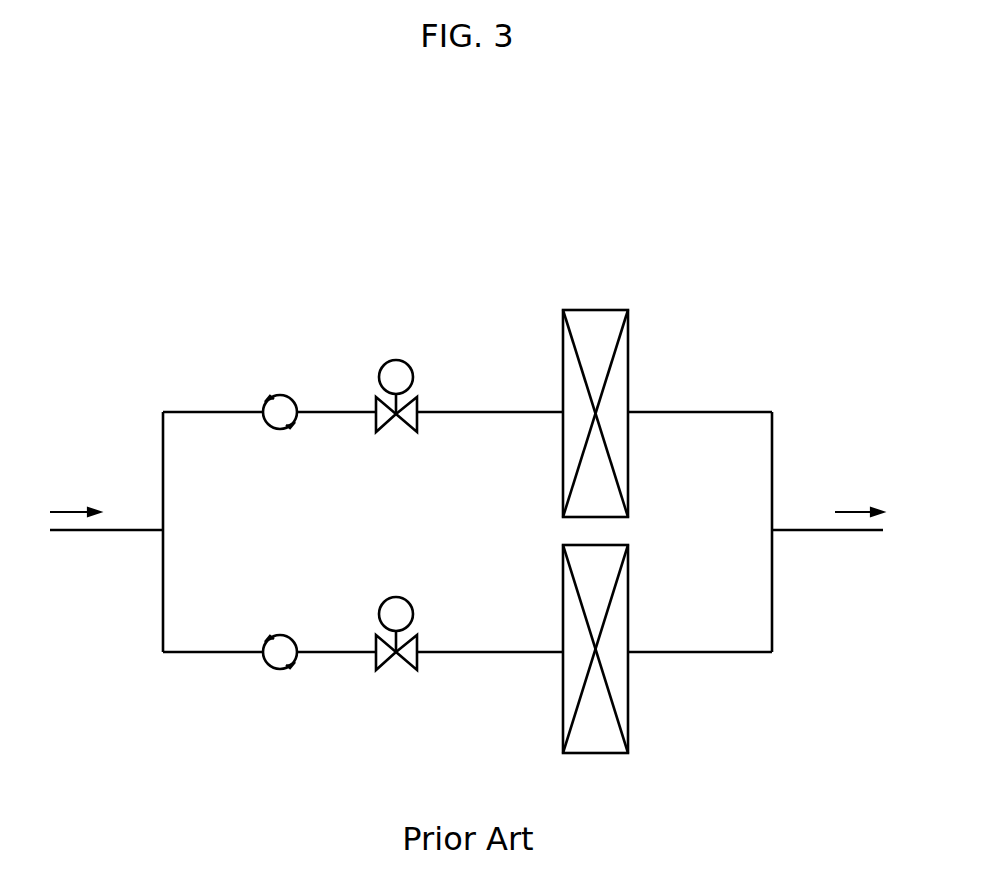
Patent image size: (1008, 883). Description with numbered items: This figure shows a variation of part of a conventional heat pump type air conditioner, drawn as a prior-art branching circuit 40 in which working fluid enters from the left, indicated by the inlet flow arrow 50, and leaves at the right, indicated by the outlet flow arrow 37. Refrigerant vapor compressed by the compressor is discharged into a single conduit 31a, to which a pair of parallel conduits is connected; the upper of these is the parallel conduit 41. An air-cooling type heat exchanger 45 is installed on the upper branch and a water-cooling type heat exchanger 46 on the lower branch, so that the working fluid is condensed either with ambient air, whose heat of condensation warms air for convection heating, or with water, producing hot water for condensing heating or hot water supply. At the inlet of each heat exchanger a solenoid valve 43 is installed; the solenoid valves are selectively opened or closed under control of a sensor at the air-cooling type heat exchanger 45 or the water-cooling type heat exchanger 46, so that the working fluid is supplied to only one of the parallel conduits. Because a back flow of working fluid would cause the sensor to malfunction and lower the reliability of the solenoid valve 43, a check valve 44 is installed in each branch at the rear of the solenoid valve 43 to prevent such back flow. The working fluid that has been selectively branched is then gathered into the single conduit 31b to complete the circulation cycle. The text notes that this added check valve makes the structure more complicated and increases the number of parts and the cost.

The prior art flow system 40 is at (758, 366).
The parallel conduit 41 is at (210, 411).
The solenoid valve 43 is at (396, 360).
The check valve 44 is at (284, 398).
The air-cooling type heat exchanger 45 is at (628, 358).
The water-cooling type heat exchanger 46 is at (628, 695).
The inlet flow 50 is at (75, 498).
The outlet flow 37 is at (859, 498).
The single conduit 31a is at (128, 532).
The single conduit 31b is at (808, 532).